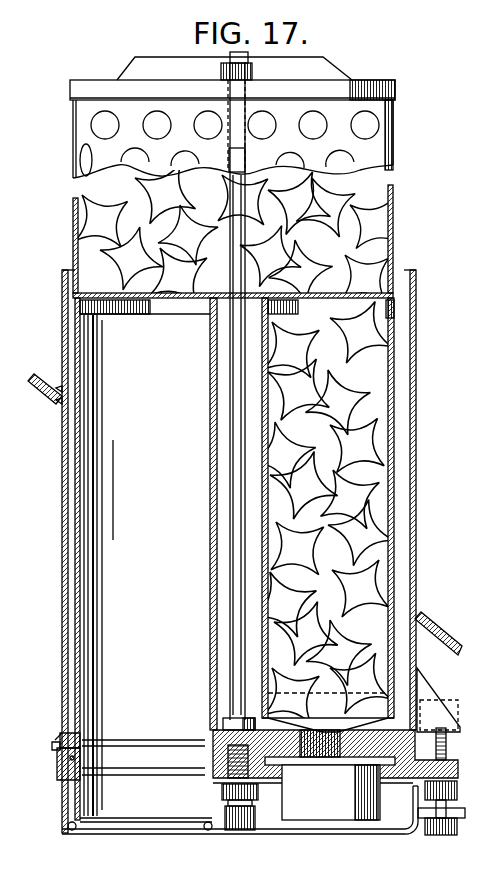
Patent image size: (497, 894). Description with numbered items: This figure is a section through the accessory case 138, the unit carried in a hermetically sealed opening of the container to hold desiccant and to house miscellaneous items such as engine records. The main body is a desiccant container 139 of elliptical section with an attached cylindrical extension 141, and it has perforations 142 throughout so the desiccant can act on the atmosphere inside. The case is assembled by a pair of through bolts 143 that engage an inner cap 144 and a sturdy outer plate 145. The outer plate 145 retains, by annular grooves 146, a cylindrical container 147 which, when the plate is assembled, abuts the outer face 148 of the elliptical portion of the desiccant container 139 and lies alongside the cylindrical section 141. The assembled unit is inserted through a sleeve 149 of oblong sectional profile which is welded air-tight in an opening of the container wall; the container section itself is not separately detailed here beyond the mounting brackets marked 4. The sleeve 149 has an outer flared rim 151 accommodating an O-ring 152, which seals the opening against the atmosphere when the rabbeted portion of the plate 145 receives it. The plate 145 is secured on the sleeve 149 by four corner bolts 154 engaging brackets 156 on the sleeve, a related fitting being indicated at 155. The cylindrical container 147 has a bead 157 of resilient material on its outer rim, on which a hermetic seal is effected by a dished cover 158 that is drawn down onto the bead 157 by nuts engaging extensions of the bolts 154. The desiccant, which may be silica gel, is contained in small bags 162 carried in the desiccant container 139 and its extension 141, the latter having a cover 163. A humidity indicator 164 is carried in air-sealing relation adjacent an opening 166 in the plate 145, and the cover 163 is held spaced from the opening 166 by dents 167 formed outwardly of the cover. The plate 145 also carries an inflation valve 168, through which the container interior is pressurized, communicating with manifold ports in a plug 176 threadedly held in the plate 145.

The mounting bracket 4 is at (466, 633).
The accessory case 138 is at (426, 371).
The desiccant container 139 is at (394, 238).
The cylindrical extension 141 is at (398, 440).
The perforations 142 is at (125, 158).
The through bolts 143 is at (226, 396).
The inner cap 144 is at (316, 80).
The outer plate 145 is at (458, 767).
The annular grooves 146 is at (70, 764).
The cylindrical container 147 is at (78, 688).
The outer face 148 is at (213, 318).
The sleeve 149 is at (416, 478).
The outer flared rim 151 is at (66, 734).
The O-ring 152 is at (60, 744).
The corner bolts 154 is at (447, 744).
The bracket plate 155 is at (462, 812).
The brackets 156 is at (442, 690).
The bead 157 is at (210, 830).
The dished cover 158 is at (306, 836).
The bags 162 is at (372, 212).
The cover 163 is at (322, 692).
The humidity indicator 164 is at (282, 812).
The opening 166 is at (350, 742).
The dents 167 is at (305, 725).
The inflation valve 168 is at (232, 832).
The plug 176 is at (222, 722).